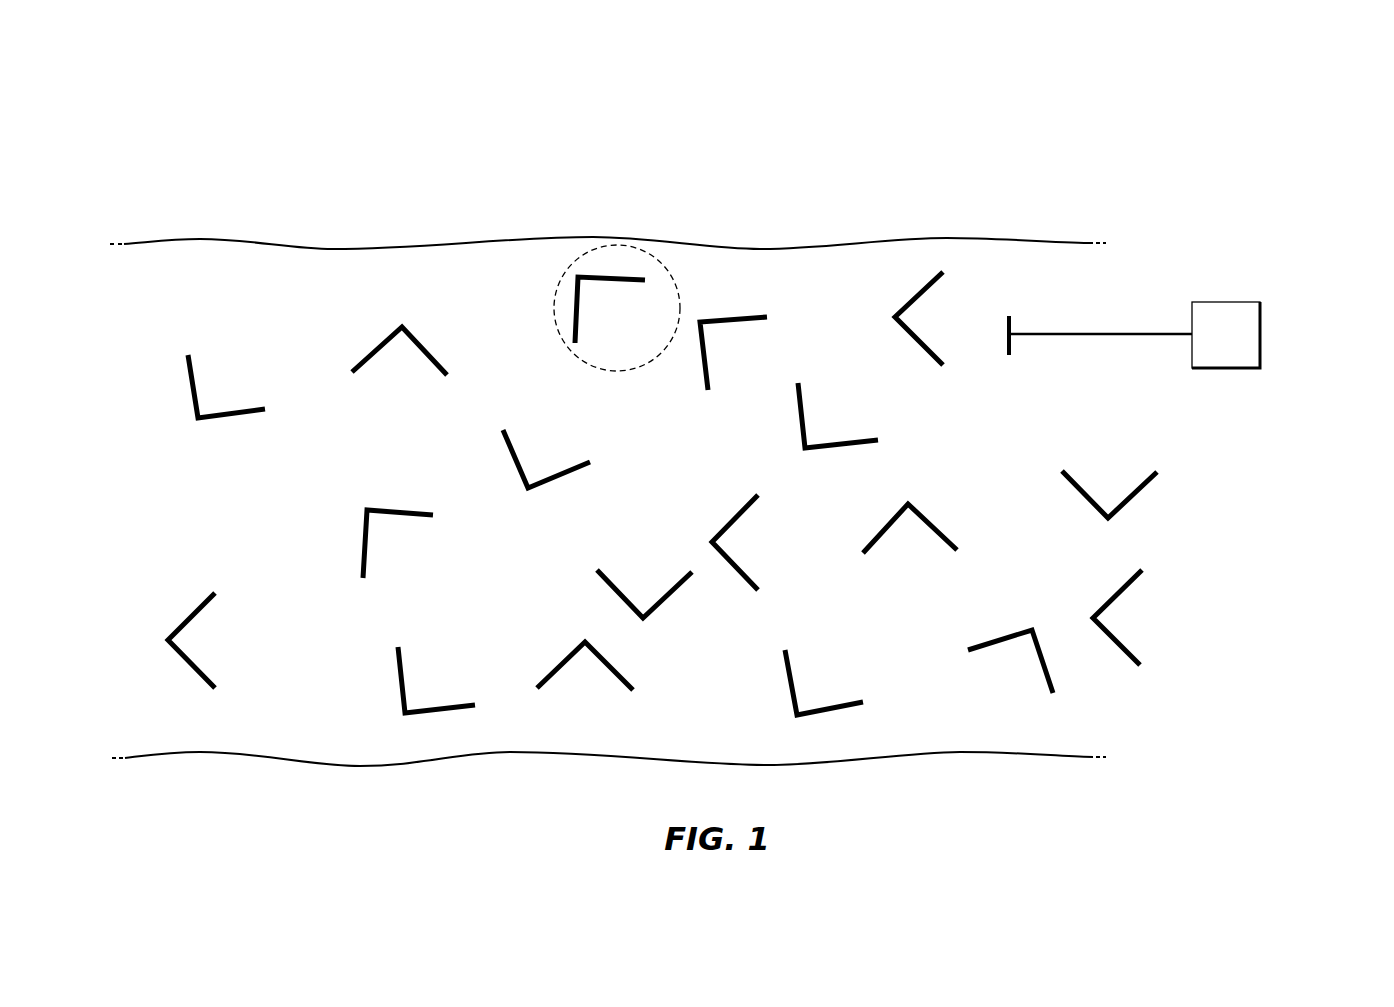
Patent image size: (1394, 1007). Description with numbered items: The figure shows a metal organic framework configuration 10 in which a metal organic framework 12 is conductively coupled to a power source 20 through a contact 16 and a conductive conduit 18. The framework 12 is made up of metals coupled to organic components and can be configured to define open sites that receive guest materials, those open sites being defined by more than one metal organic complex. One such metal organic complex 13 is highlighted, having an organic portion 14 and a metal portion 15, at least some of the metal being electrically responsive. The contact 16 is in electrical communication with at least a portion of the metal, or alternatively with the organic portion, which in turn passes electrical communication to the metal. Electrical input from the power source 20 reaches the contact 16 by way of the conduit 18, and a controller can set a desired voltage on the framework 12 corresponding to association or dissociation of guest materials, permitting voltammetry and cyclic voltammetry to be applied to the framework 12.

The metal organic framework configuration 10 is at (1272, 108).
The metal organic framework 12 is at (333, 718).
The metal organic complex 13 is at (678, 292).
The organic portion 14 is at (360, 362).
The metal portion 15 is at (207, 327).
The contact 16 is at (1012, 322).
The conductive conduit 18 is at (1100, 333).
The power source 20 is at (1248, 342).